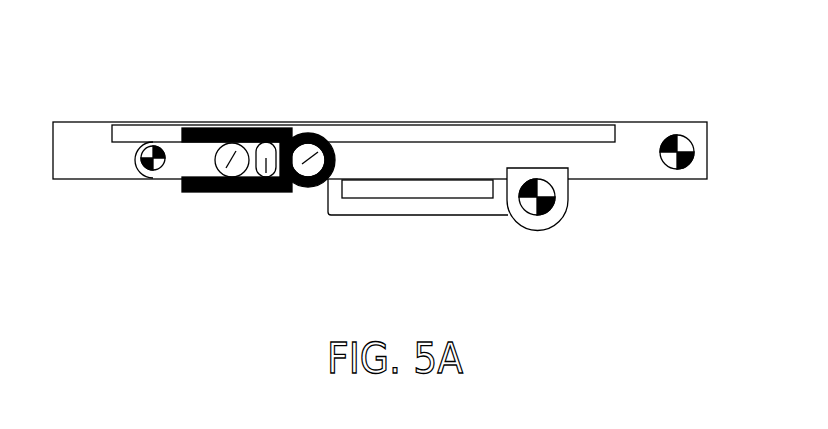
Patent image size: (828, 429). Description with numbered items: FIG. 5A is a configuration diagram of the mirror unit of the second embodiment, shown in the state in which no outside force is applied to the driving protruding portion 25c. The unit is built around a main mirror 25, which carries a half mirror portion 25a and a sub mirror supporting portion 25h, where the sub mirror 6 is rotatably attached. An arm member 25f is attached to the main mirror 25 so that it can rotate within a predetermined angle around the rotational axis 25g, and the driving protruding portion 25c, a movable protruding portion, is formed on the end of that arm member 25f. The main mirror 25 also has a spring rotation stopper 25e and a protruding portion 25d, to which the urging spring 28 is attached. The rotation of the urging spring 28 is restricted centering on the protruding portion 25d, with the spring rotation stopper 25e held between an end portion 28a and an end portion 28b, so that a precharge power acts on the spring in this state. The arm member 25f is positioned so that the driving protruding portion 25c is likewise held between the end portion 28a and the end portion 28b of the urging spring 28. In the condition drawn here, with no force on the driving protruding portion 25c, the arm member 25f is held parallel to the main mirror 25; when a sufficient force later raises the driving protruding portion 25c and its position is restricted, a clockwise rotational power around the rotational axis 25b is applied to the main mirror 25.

The main mirror 25 is at (83, 122).
The half mirror portion 25a is at (478, 125).
The rotational axis 25b is at (667, 136).
The driving protruding portion 25c is at (240, 128).
The protruding portion 25d is at (327, 139).
The spring rotation stopper 25e is at (261, 193).
The arm member 25f is at (176, 168).
The rotational axis 25g is at (143, 175).
The sub mirror supporting portion 25h is at (558, 222).
The urging spring 28 is at (242, 158).
The end portion 28a is at (200, 128).
The end portion 28b is at (200, 193).
The sub mirror 6 is at (410, 217).